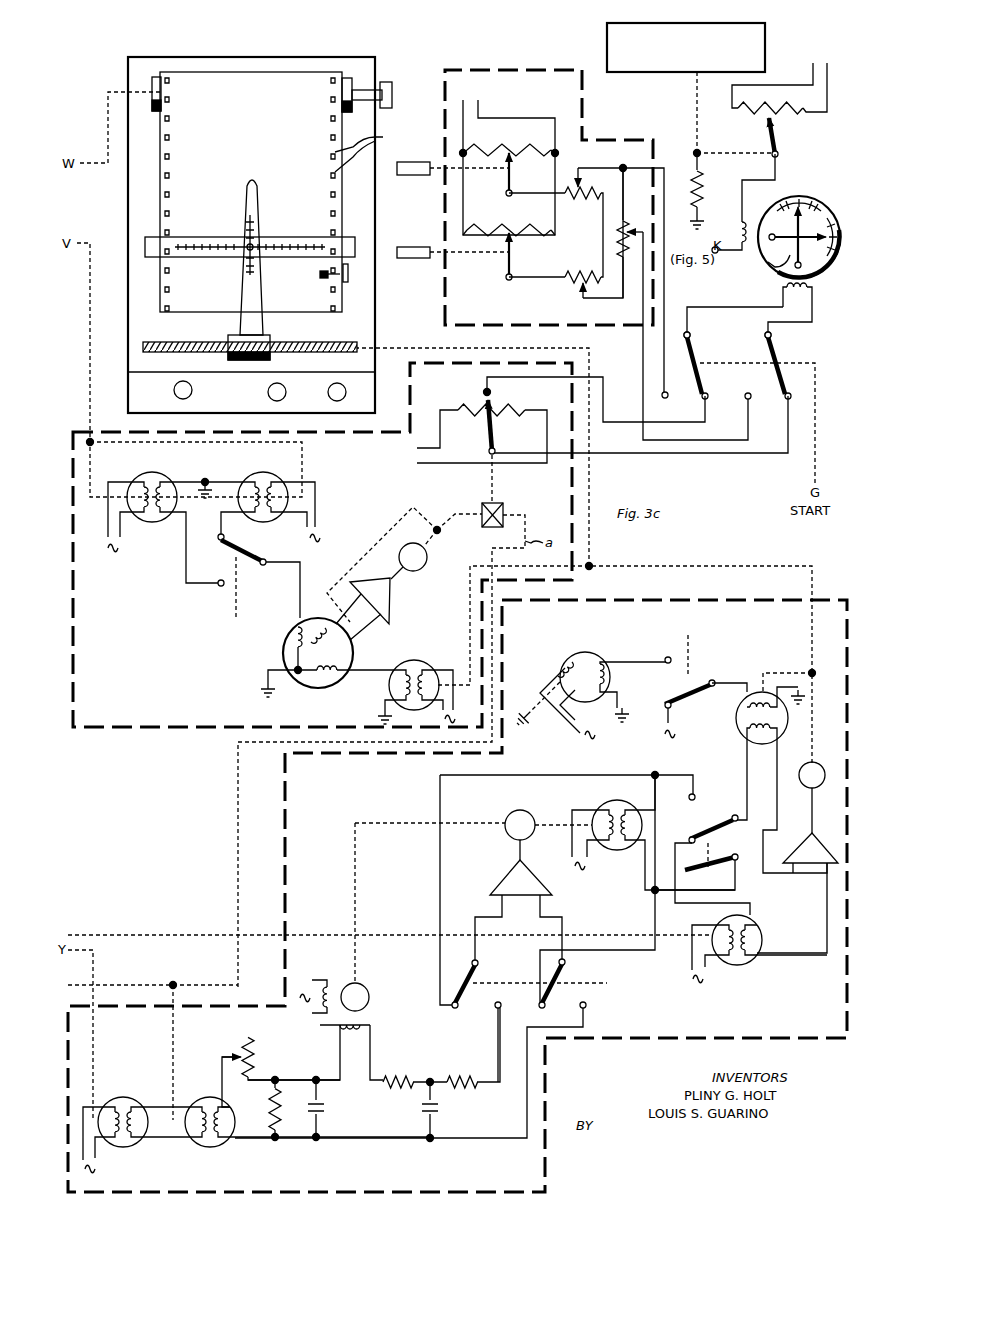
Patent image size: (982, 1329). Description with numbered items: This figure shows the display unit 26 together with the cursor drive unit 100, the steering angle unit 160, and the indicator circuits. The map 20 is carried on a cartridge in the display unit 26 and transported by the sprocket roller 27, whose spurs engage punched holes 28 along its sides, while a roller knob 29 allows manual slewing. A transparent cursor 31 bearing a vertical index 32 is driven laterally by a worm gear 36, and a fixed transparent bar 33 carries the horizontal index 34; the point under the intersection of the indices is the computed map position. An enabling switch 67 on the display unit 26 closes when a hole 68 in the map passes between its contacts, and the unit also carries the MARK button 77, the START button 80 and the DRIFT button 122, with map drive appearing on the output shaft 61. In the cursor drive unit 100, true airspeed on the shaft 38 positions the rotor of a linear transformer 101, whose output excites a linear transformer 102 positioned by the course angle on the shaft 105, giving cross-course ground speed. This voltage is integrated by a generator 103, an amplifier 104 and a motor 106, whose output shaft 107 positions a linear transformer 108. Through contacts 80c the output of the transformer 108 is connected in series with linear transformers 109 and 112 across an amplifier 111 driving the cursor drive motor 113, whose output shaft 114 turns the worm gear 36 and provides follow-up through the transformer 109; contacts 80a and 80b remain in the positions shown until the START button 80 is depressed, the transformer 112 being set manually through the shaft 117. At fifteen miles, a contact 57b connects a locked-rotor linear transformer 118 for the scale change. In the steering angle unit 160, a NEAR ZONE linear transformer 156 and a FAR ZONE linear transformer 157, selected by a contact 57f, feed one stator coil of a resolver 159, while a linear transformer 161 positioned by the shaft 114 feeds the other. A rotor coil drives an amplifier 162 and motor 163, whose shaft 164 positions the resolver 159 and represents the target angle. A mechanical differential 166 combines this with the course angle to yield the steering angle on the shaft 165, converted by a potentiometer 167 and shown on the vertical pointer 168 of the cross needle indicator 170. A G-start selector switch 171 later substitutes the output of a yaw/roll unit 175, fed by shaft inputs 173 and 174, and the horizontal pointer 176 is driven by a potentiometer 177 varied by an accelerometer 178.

The display unit 26 is at (126, 70).
The map 20 is at (236, 133).
The sprocket roller 27 is at (156, 76).
The roller knob 29 is at (390, 80).
The punched holes 28 is at (368, 151).
The horizontal index 34 is at (213, 247).
The transparent bar 33 is at (150, 258).
The vertical index 32 is at (254, 218).
The transparent cursor 31 is at (240, 326).
The worm gear 36 is at (330, 342).
The hole 68 is at (320, 275).
The enabling switch 67 is at (348, 275).
The START button 80 is at (174, 391).
The MARK button 77 is at (268, 392).
The DRIFT button 122 is at (328, 395).
The map drive output shaft 61 is at (108, 120).
The yaw/roll unit 175 is at (586, 127).
The yaw shaft input 173 is at (415, 176).
The roll shaft input 174 is at (415, 259).
The accelerometer 178 is at (607, 31).
The potentiometer 177 is at (790, 120).
The horizontal pointer 176 is at (815, 228).
The vertical pointer 168 is at (772, 268).
The cross needle indicator 170 is at (824, 282).
The G-start selector switch 171 is at (760, 384).
The potentiometer 167 is at (495, 430).
The shaft 165 is at (495, 480).
The mechanical differential 166 is at (507, 510).
The shaft 164 is at (390, 525).
The motor 163 is at (417, 572).
The amplifier 162 is at (390, 603).
The steering angle unit 160 is at (140, 734).
The NEAR ZONE linear transformer 156 is at (140, 473).
The FAR ZONE linear transformer 157 is at (259, 473).
The contact 57f is at (260, 586).
The resolver 159 is at (283, 650).
The linear transformer 161 is at (415, 661).
The output shaft 114 is at (470, 654).
The cursor drive unit 100 is at (281, 828).
The linear transformer 118 is at (578, 655).
The contact 57b is at (668, 693).
The linear transformer 109 is at (737, 712).
The cursor drive motor 113 is at (820, 762).
The amplifier 111 is at (832, 838).
The contacts 80a is at (718, 825).
The contacts 80c is at (712, 856).
The linear transformer 108 is at (630, 798).
The motor 106 is at (507, 805).
The output shaft 107 is at (553, 817).
The amplifier 104 is at (504, 876).
The contacts 80b is at (478, 978).
The linear transformer 112 is at (762, 931).
The shaft 117 is at (212, 934).
The shaft 105 is at (225, 980).
The shaft 38 is at (93, 977).
The generator 103 is at (366, 984).
The linear transformer 102 is at (211, 1098).
The linear transformer 101 is at (134, 1098).